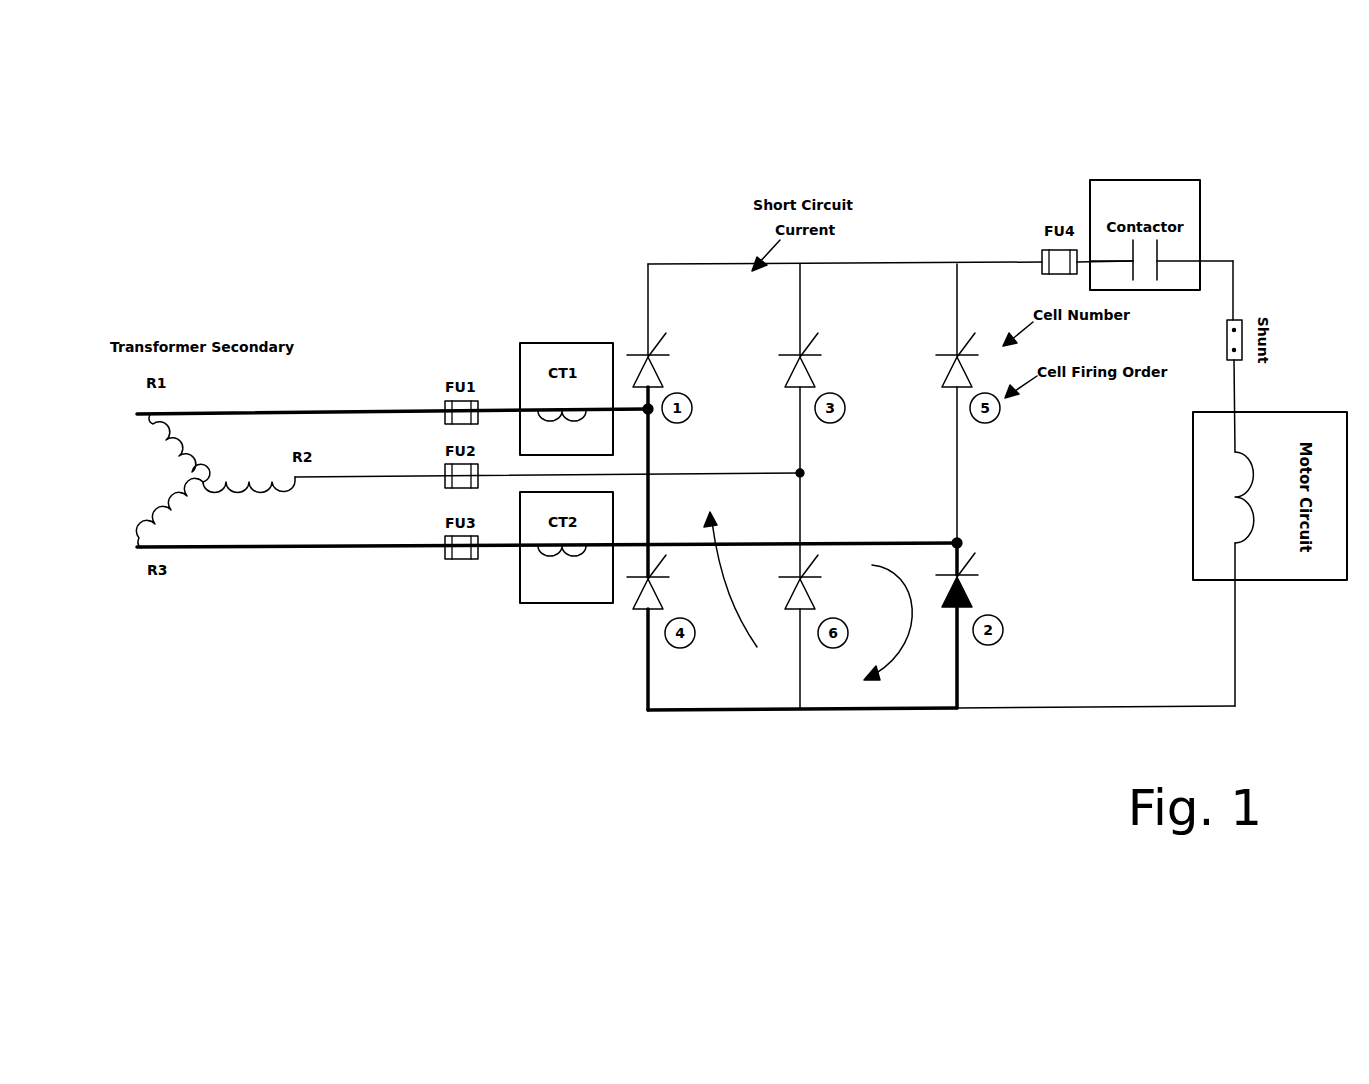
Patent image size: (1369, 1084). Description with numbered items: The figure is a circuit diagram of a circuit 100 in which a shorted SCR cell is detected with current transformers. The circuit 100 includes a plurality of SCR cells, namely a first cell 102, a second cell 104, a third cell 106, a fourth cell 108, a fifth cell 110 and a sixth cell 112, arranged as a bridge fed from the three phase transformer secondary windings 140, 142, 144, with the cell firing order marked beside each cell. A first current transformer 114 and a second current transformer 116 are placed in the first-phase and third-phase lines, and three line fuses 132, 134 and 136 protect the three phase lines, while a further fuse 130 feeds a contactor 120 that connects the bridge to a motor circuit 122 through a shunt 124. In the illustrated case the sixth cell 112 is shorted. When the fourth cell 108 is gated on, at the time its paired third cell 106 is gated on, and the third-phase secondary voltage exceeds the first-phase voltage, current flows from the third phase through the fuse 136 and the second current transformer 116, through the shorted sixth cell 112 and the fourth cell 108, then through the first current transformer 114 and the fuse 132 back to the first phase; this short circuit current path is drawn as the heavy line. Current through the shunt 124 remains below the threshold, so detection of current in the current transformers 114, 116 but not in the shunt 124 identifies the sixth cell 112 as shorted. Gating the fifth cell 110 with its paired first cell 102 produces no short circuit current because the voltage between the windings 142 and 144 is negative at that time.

The circuit 100 is at (546, 752).
The 1F cell 102 is at (632, 373).
The 2F cell 104 is at (788, 368).
The 3F cell 106 is at (942, 368).
The 4F cell 108 is at (640, 611).
The 5F cell 110 is at (800, 611).
The 6F cell 112 is at (955, 609).
The current transformer CT1 114 is at (540, 343).
The current transformer CT2 116 is at (555, 604).
The contactor 120 is at (1112, 180).
The motor circuit 122 is at (1297, 582).
The shunt 124 is at (1226, 332).
The fuse 130 is at (1040, 258).
The fuse 132 is at (445, 406).
The fuse 134 is at (445, 477).
The fuse 136 is at (460, 561).
The transformer secondary winding 140 is at (160, 438).
The transformer secondary winding 142 is at (157, 513).
The transformer secondary winding 144 is at (240, 482).